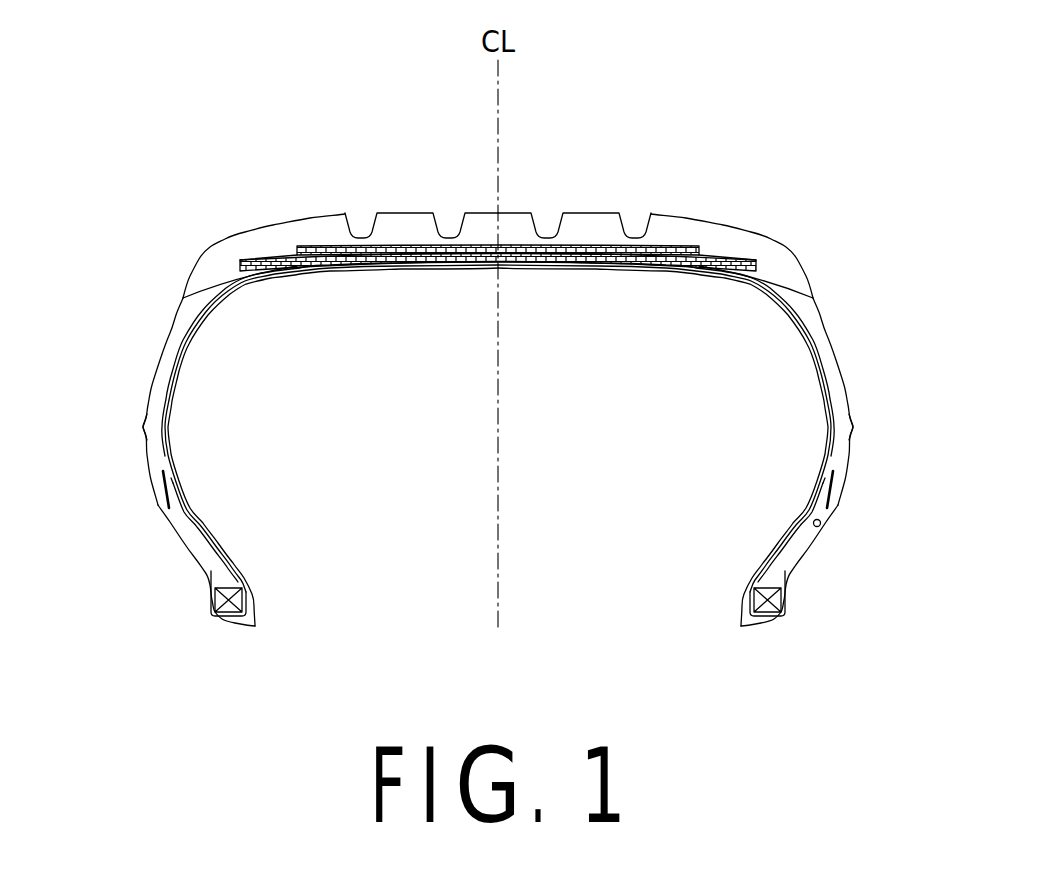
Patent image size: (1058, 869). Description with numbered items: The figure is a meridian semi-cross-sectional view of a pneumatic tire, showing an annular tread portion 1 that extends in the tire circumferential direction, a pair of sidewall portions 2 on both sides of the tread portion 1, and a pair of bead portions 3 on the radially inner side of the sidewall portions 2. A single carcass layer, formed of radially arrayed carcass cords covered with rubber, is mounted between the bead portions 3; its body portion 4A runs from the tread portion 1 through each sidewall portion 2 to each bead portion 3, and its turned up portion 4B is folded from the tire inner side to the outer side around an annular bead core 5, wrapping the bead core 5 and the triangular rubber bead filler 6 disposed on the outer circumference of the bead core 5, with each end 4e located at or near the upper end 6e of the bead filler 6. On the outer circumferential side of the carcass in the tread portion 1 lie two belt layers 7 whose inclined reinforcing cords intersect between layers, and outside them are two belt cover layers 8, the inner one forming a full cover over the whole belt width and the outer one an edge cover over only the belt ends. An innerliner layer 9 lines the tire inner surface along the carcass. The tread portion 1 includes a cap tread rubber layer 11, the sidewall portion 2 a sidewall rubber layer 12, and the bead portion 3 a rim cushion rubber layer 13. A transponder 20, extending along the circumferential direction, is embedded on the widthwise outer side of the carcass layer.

The tread portion 1 is at (525, 195).
The sidewall portion 2 is at (150, 368).
The bead portion 3 is at (194, 606).
The body portion 4A is at (228, 538).
The turned up portion 4B is at (212, 575).
The end of carcass layer 4e is at (173, 467).
The bead core 5 is at (245, 593).
The bead filler 6 is at (192, 515).
The upper end of bead filler 6e is at (182, 477).
The belt layer 7 is at (590, 266).
The belt cover layer 8 is at (294, 250).
The innerliner layer 9 is at (680, 267).
The cap tread rubber layer 11 is at (773, 258).
The sidewall rubber layer 12 is at (146, 432).
The rim cushion rubber layer 13 is at (170, 510).
The transponder 20 is at (822, 523).